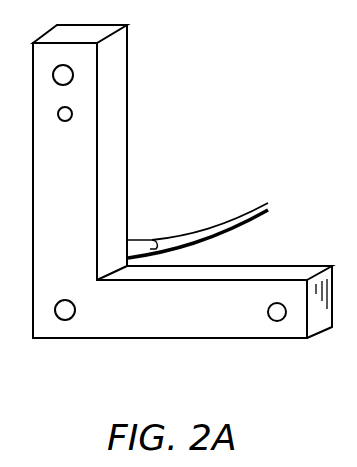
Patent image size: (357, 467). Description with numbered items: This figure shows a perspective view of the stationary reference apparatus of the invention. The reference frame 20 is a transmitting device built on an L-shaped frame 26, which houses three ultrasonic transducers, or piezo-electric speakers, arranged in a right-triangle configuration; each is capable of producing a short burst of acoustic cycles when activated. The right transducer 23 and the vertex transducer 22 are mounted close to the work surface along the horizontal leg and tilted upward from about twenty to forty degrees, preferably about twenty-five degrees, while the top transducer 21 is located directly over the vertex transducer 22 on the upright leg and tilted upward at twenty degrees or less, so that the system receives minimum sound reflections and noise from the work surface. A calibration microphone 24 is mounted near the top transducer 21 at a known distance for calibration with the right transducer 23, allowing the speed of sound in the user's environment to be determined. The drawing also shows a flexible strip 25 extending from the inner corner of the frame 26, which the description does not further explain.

The reference frame 20 is at (216, 81).
The top transducer 21 is at (73, 75).
The vertex transducer 22 is at (75, 313).
The right transducer 23 is at (268, 318).
The calibration microphone 24 is at (72, 112).
The flexible strip 25 is at (199, 230).
The frame 26 is at (77, 215).